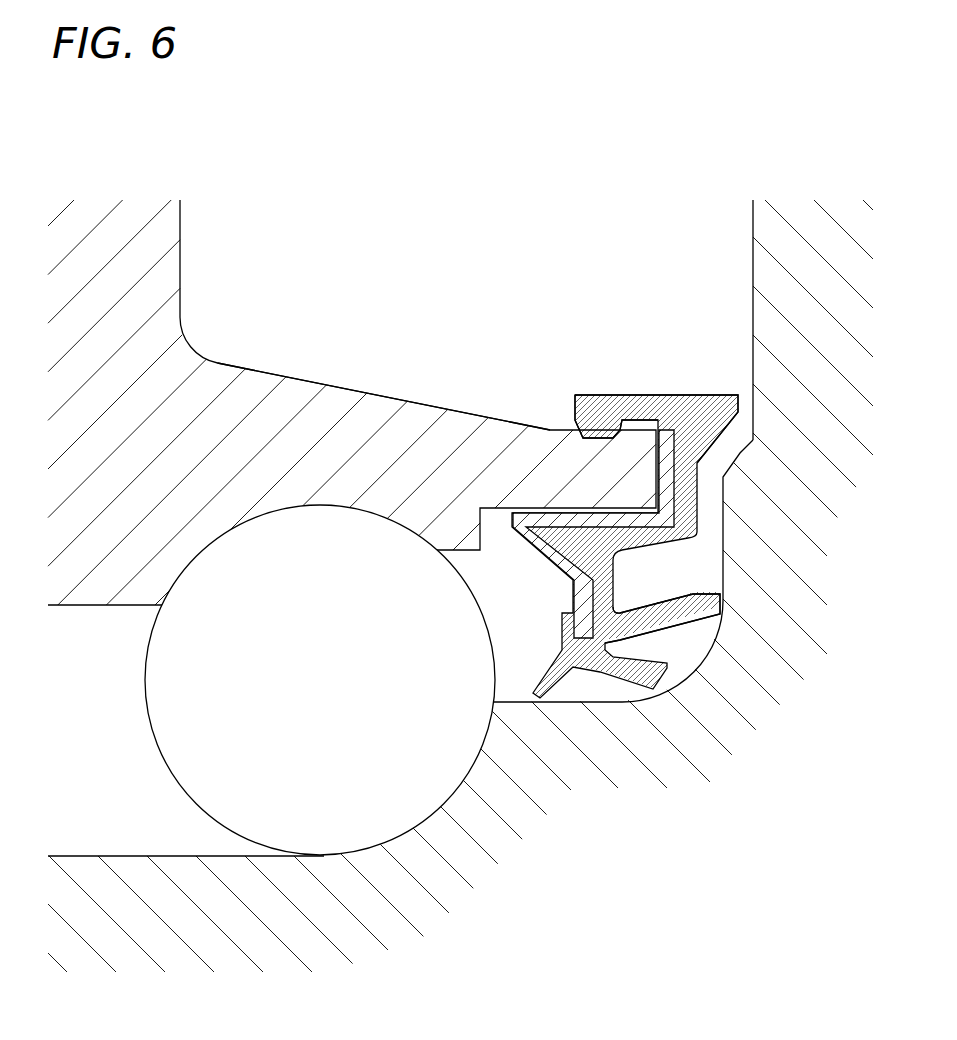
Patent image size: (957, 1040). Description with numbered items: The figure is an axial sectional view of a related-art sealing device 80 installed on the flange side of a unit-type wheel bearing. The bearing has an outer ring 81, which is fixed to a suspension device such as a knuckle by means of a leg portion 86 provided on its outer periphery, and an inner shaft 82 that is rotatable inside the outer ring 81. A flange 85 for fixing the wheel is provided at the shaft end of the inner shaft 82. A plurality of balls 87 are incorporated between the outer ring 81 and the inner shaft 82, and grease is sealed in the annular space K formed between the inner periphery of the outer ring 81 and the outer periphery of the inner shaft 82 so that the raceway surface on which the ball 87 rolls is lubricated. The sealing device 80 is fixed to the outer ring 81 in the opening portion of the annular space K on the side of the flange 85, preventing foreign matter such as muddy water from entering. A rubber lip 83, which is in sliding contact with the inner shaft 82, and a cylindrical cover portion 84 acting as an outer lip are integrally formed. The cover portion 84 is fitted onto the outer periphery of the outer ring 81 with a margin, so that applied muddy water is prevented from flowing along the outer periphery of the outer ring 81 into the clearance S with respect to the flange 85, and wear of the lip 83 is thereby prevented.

The sealing device 80 is at (643, 519).
The outer ring 81 is at (308, 398).
The inner shaft 82 is at (603, 761).
The rubber lip 83 is at (684, 612).
The cover portion 84 is at (652, 402).
The flange 85 is at (773, 258).
The leg portion 86 is at (148, 257).
The ball 87 is at (418, 797).
The clearance S is at (708, 500).
The annular space K is at (110, 823).